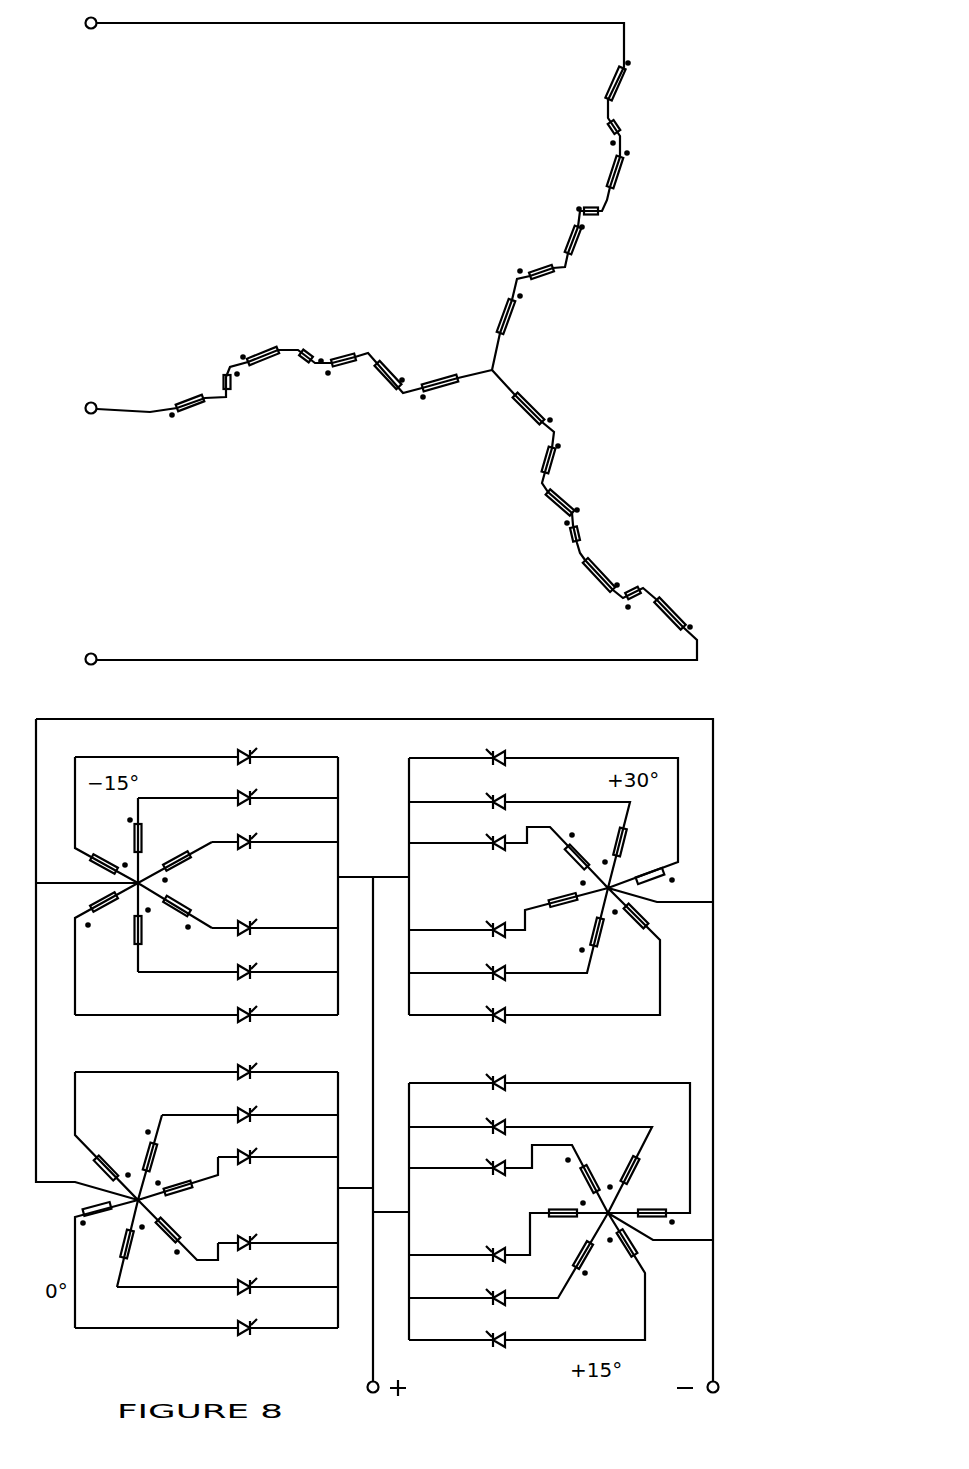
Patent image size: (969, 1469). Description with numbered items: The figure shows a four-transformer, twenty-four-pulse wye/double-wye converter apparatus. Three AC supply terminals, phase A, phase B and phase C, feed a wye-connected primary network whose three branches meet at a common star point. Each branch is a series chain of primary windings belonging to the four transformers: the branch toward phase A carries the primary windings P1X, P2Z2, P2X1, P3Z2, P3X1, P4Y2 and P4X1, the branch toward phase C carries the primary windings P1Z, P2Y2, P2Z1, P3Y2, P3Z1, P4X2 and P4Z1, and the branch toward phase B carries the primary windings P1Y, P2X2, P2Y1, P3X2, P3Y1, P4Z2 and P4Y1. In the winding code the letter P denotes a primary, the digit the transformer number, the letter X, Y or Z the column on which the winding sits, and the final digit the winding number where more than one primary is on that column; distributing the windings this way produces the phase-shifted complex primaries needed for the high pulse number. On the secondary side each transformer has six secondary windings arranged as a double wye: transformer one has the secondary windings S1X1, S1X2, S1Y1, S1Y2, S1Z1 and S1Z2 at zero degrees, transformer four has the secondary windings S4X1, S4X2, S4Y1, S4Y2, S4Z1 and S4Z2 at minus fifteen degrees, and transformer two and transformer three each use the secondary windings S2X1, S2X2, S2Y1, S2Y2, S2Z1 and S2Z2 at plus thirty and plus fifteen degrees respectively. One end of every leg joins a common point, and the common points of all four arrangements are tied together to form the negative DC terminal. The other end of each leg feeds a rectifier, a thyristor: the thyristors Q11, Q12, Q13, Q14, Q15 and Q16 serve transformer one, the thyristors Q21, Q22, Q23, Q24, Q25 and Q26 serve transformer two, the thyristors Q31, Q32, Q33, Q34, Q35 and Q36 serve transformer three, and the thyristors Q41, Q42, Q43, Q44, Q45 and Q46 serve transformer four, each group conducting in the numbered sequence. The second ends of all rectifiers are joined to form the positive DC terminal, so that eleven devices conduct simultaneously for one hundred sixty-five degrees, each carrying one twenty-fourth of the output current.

The phase A terminal A is at (72, 24).
The phase B terminal B is at (72, 660).
The phase C terminal C is at (72, 409).
The primary winding P1X is at (525, 315).
The primary winding P1Y is at (543, 404).
The primary winding P1Z is at (448, 398).
The primary winding P2X1 is at (598, 241).
The primary winding P2X2 is at (576, 459).
The primary winding P2Y1 is at (540, 505).
The primary winding P2Y2 is at (411, 369).
The primary winding P2Z1 is at (343, 378).
The primary winding P2Z2 is at (555, 283).
The primary winding P3X1 is at (640, 169).
The primary winding P3X2 is at (601, 536).
The primary winding P3Y1 is at (576, 576).
The primary winding P3Y2 is at (322, 344).
The primary winding P3Z1 is at (253, 344).
The primary winding P3Z2 is at (566, 199).
The primary winding P4X1 is at (592, 80).
The primary winding P4X2 is at (200, 373).
The primary winding P4Y1 is at (658, 622).
The primary winding P4Y2 is at (642, 130).
The primary winding P4Z1 is at (195, 421).
The primary winding P4Z2 is at (651, 586).
The thyristor Q11 is at (275, 1107).
The thyristor Q12 is at (275, 1149).
The thyristor Q13 is at (275, 1235).
The thyristor Q14 is at (275, 1279).
The thyristor Q15 is at (275, 1320).
The thyristor Q16 is at (275, 1064).
The thyristor Q21 is at (468, 834).
The thyristor Q22 is at (468, 921).
The thyristor Q23 is at (468, 964).
The thyristor Q24 is at (468, 1006).
The thyristor Q25 is at (468, 749).
The thyristor Q26 is at (468, 793).
The thyristor Q31 is at (468, 1159).
The thyristor Q32 is at (468, 1246).
The thyristor Q33 is at (468, 1289).
The thyristor Q34 is at (468, 1331).
The thyristor Q35 is at (468, 1074).
The thyristor Q36 is at (468, 1118).
The thyristor Q41 is at (275, 790).
The thyristor Q42 is at (275, 834).
The thyristor Q43 is at (275, 920).
The thyristor Q44 is at (275, 964).
The thyristor Q45 is at (275, 1007).
The thyristor Q46 is at (275, 749).
The secondary winding S1X1 is at (180, 1150).
The secondary winding S1X2 is at (151, 1250).
The secondary winding S1Y1 is at (195, 1231).
The secondary winding S1Y2 is at (87, 1163).
The secondary winding S1Z1 is at (71, 1207).
The secondary winding S1Z2 is at (204, 1190).
The secondary winding S2X1 is at (557, 1012).
The secondary winding S2X2 is at (656, 1088).
The secondary winding S2Y1 is at (582, 1099).
The secondary winding S2Y2 is at (603, 998).
The secondary winding S2Z1 is at (656, 1035).
The secondary winding S2Z2 is at (537, 1048).
The secondary winding S4X1 is at (163, 833).
The secondary winding S4X2 is at (167, 932).
The secondary winding S4Y1 is at (201, 907).
The secondary winding S4Y2 is at (83, 868).
The secondary winding S4Z1 is at (78, 907).
The secondary winding S4Z2 is at (205, 867).